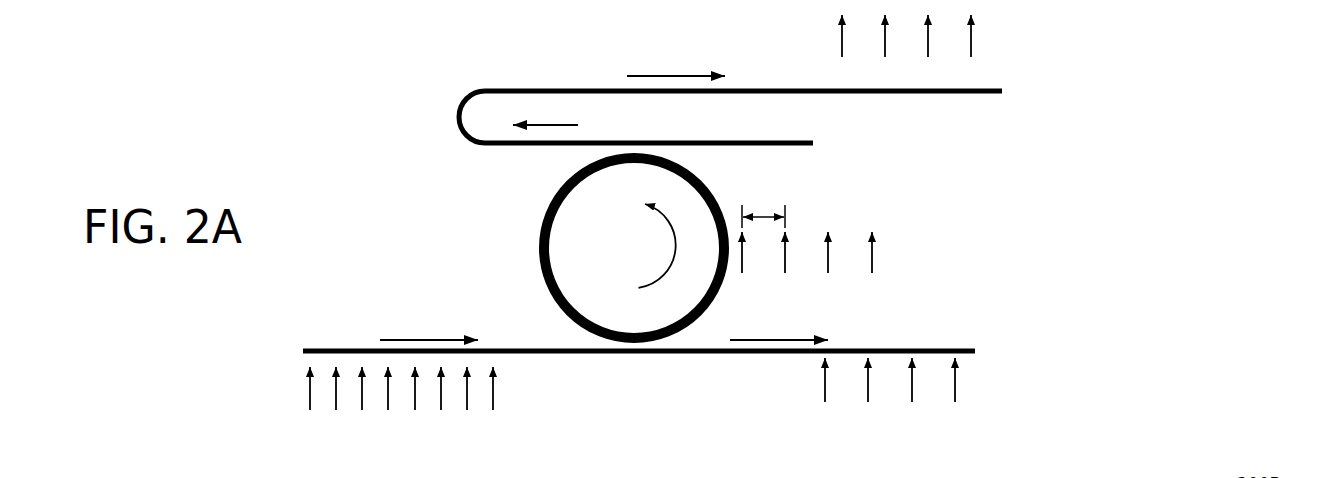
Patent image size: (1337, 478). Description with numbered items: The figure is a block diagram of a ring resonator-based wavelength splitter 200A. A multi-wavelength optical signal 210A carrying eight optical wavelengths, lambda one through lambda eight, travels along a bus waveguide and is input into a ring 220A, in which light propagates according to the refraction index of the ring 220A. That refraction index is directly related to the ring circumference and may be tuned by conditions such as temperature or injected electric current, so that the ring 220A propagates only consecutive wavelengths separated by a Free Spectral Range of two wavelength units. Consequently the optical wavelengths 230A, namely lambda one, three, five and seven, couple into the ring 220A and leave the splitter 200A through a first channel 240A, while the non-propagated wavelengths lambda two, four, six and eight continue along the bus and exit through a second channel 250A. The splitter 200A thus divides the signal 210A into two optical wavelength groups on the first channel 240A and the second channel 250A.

The ring resonator-based wavelength splitter 200A is at (1142, 155).
The multi-wavelength optical signal 210A is at (288, 392).
The ring 220A is at (538, 248).
The optical wavelengths 230A is at (843, 218).
The first channel 240A is at (985, 35).
The second channel 250A is at (972, 378).